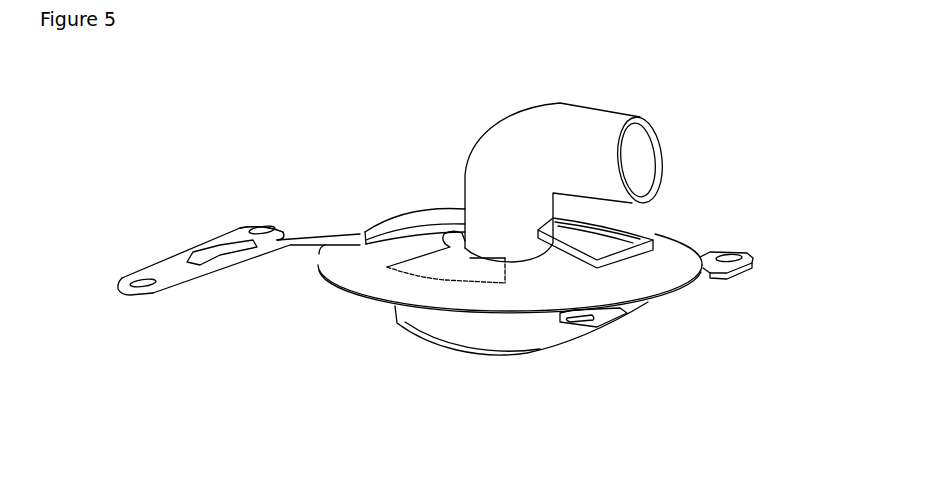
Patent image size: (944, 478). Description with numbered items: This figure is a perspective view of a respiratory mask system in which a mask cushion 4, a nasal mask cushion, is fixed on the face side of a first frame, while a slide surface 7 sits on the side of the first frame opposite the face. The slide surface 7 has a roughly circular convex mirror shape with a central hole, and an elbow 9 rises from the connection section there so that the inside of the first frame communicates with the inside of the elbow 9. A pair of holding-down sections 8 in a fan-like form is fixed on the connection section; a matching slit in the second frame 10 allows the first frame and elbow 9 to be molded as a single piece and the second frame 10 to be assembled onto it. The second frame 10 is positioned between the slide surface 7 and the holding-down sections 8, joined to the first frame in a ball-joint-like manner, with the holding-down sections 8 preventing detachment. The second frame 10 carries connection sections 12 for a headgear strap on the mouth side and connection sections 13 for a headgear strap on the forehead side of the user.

The mask cushion 4 is at (510, 340).
The slide surface 7 is at (455, 262).
The holding-down section 8 is at (612, 250).
The elbow 9 is at (578, 137).
The second frame 10 is at (352, 250).
The connection section for a headgear strap 12 is at (723, 260).
The connection section for a headgear strap 13 is at (142, 272).